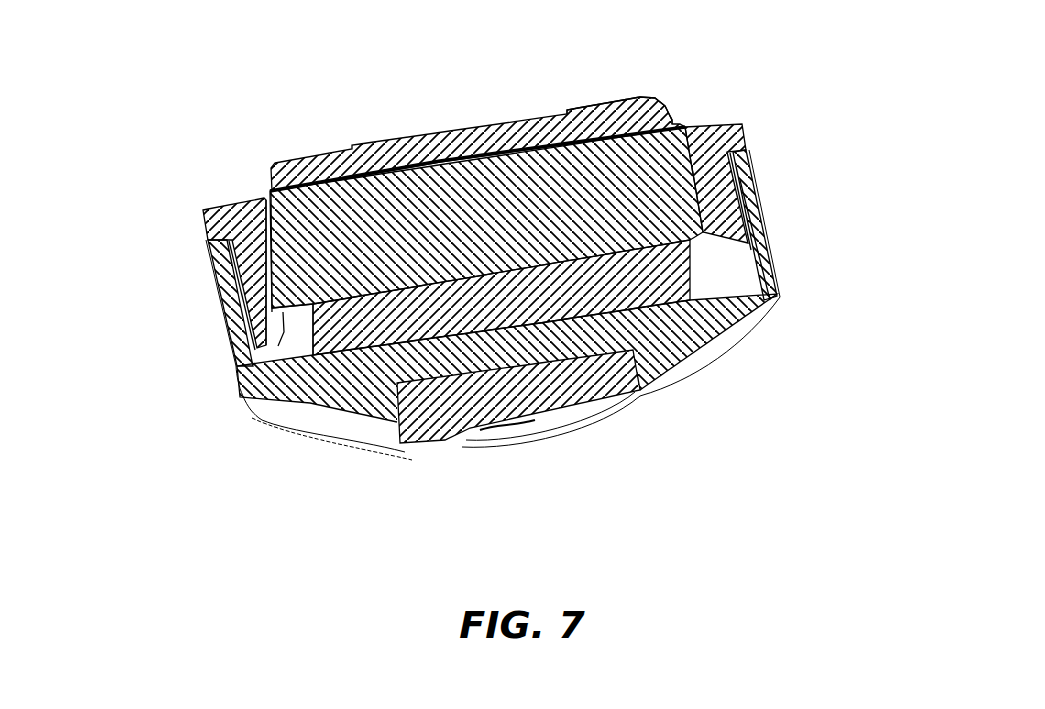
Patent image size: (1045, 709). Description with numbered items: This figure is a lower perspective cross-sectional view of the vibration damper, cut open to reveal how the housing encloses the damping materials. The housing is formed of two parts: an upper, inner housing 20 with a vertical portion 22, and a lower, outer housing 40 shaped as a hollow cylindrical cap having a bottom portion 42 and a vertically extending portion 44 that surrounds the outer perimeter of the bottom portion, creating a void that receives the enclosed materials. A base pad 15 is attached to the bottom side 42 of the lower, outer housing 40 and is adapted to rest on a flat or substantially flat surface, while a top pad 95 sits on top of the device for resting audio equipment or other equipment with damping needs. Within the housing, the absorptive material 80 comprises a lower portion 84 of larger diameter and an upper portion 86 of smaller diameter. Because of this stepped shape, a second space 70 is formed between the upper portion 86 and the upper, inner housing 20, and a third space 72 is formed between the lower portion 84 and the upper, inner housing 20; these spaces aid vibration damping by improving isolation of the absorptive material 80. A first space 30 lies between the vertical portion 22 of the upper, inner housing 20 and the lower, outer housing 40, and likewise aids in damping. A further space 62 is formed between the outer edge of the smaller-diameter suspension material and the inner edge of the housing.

The base pad 15 is at (436, 445).
The upper, inner housing 20 is at (697, 150).
The vertical portion 22 is at (750, 170).
The first space 30 is at (752, 254).
The lower, outer housing 40 is at (779, 300).
The bottom portion 42 is at (296, 386).
The vertically extending portion 44 is at (761, 234).
The space 62 is at (277, 360).
The second space 70 is at (263, 192).
The third space 72 is at (258, 258).
The absorptive material 80 is at (262, 198).
The lower portion 84 is at (754, 208).
The upper portion 86 is at (737, 124).
The top pad 95 is at (594, 112).